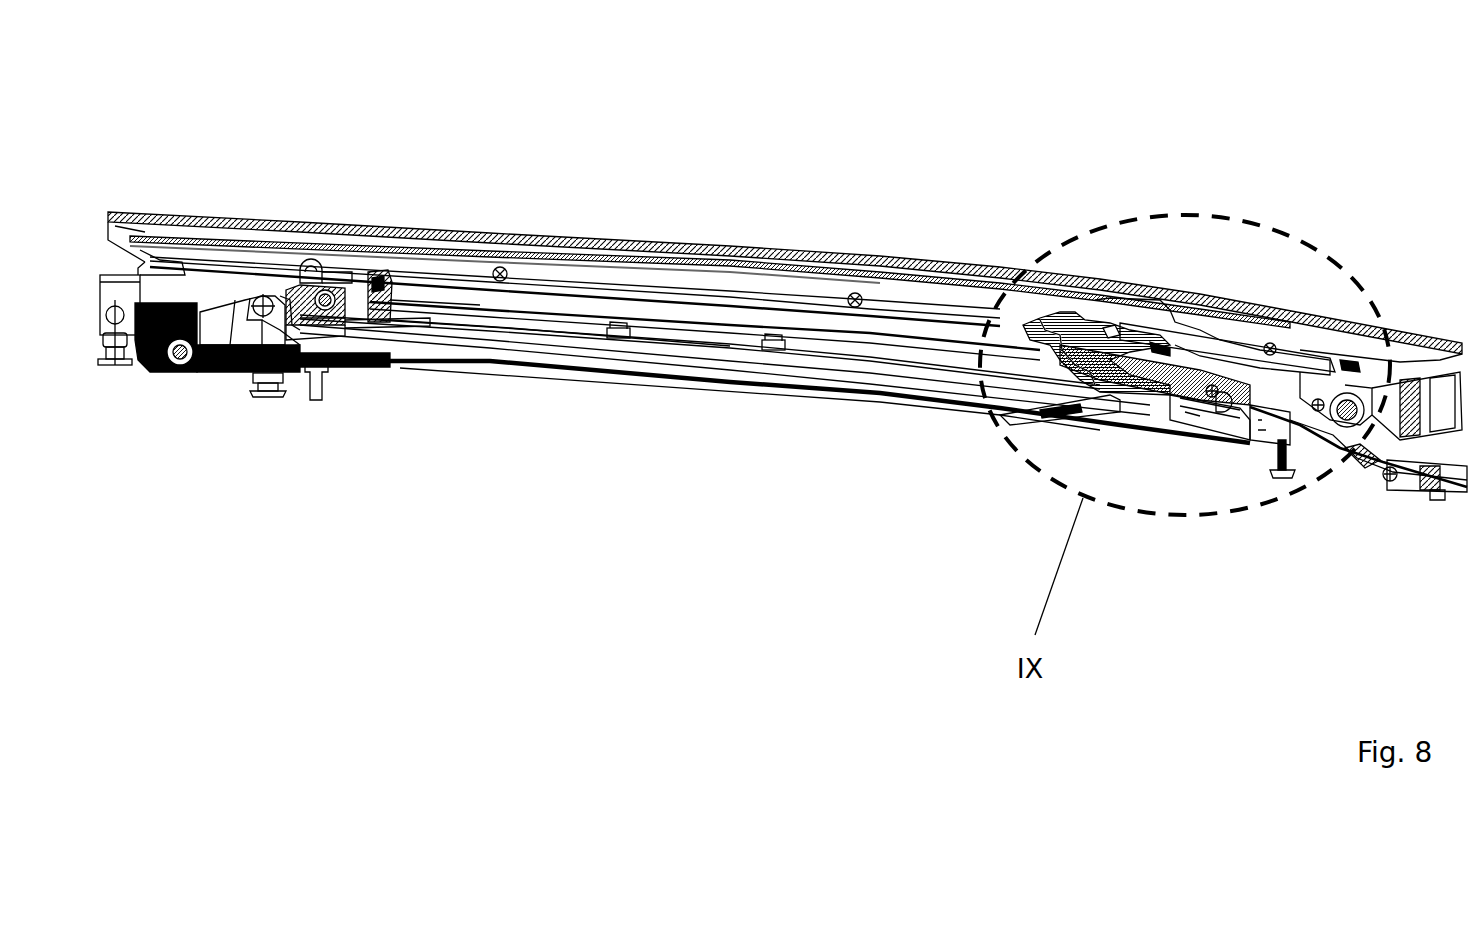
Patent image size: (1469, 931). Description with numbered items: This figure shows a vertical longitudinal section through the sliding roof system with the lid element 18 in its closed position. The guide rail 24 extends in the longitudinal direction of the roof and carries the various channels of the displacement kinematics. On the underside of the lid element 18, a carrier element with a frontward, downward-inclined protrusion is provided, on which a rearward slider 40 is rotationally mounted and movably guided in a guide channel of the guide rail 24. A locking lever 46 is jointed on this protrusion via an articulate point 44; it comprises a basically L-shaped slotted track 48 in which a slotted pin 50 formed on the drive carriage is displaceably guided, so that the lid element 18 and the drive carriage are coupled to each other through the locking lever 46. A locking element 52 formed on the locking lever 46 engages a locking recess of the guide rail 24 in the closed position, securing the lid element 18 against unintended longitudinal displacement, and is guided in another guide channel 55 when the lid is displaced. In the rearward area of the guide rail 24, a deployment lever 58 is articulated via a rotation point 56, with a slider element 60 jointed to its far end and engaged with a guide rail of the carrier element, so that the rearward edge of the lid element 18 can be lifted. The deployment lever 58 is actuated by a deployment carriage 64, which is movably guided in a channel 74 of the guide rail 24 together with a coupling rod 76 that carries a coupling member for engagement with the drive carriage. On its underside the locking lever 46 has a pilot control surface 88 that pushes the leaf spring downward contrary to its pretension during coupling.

The lid element 18 is at (835, 252).
The guide rail 24 is at (600, 373).
The slider 40 is at (1410, 478).
The articulate point 44 is at (1345, 392).
The locking lever 46 is at (1253, 393).
The slotted track 48 is at (1163, 378).
The slotted pin 50 is at (1208, 390).
The locking element 52 is at (1108, 337).
The guide channel 55 is at (651, 293).
The rotation point 56 is at (182, 363).
The deployment lever 58 is at (225, 373).
The slider element 60 is at (357, 280).
The deployment carriage 64 is at (405, 300).
The channel 74 is at (508, 325).
The coupling rod 76 is at (727, 343).
The pilot control surface 88 is at (1113, 393).